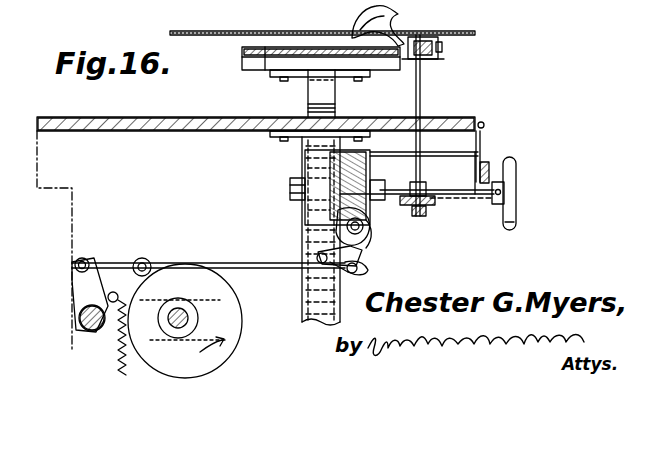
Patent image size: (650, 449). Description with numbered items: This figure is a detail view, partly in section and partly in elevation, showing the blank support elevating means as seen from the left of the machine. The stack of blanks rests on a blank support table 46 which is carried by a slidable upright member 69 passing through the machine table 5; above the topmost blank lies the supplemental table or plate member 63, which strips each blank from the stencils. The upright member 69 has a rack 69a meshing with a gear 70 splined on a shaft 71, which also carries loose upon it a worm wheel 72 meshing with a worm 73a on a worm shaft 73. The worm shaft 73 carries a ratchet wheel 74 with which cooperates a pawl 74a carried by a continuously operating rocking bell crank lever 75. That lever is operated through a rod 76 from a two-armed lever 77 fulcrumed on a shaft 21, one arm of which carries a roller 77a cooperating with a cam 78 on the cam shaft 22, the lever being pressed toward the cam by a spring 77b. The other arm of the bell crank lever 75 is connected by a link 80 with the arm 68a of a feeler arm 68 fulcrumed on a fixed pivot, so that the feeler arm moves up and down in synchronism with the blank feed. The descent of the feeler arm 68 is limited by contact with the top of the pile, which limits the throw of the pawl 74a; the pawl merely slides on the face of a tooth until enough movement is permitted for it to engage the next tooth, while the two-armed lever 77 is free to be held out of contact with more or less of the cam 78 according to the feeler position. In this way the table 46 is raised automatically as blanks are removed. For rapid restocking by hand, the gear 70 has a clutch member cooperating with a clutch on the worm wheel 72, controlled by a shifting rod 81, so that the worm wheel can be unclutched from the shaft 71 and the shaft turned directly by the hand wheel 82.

The table 5 is at (216, 118).
The shaft 21 is at (80, 318).
The cam shaft 22 is at (181, 310).
The blank support table 46 is at (272, 69).
The supplemental table or plate member 63 is at (466, 31).
The feeler arm 68 is at (368, 44).
The arm of feeler arm 68a is at (440, 60).
The slidable upright member 69 is at (316, 96).
The rack 69a is at (336, 112).
The gear 70 is at (306, 180).
The shaft 71 is at (468, 196).
The worm wheel 72 is at (360, 186).
The worm shaft 73 is at (336, 223).
The worm 73a is at (368, 240).
The ratchet wheel 74 is at (318, 253).
The pawl 74a is at (366, 264).
The bell crank lever 75 is at (407, 209).
The rod 76 is at (250, 262).
The two-armed lever 77 is at (84, 276).
The roller 77a is at (140, 262).
The spring 77b is at (101, 333).
The cam 78 is at (170, 282).
The link 80 is at (421, 99).
The shifting rod 81 is at (500, 150).
The hand wheel 82 is at (516, 207).